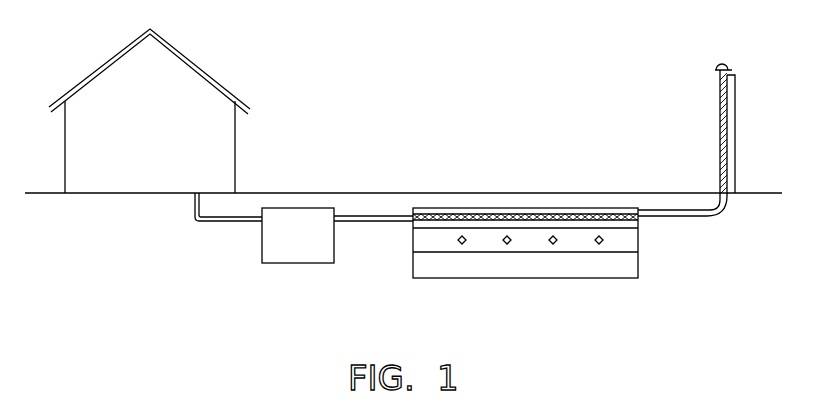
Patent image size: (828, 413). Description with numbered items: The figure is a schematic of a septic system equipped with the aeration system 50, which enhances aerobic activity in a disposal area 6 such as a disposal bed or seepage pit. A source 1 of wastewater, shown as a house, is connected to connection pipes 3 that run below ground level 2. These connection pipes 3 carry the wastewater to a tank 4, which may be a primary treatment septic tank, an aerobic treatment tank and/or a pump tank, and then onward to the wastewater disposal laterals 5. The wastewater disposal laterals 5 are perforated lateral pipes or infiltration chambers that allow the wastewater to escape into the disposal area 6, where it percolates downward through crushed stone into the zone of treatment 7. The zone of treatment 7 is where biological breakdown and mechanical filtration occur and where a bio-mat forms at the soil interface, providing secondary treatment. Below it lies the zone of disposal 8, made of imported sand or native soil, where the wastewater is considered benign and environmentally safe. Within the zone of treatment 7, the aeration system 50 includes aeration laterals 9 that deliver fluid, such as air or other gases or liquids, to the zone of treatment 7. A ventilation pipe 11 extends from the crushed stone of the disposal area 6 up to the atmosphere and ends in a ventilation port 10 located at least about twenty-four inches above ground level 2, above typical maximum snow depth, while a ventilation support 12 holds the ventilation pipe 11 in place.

The source of wastewater 1 is at (205, 68).
The ground level 2 is at (310, 193).
The connection pipes 3 is at (228, 221).
The tank 4 is at (273, 263).
The wastewater disposal laterals 5 is at (492, 214).
The disposal area 6 is at (572, 208).
The zone of treatment 7 is at (638, 240).
The zone of disposal 8 is at (638, 270).
The aeration lateral 9 is at (462, 244).
The ventilation port 10 is at (713, 67).
The ventilation pipe 11 is at (707, 216).
The ventilation support 12 is at (735, 117).
The aeration system 50 is at (528, 128).